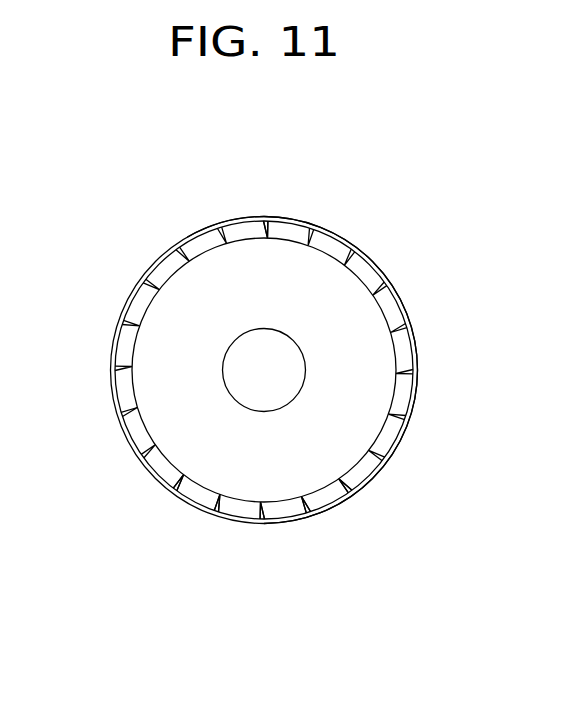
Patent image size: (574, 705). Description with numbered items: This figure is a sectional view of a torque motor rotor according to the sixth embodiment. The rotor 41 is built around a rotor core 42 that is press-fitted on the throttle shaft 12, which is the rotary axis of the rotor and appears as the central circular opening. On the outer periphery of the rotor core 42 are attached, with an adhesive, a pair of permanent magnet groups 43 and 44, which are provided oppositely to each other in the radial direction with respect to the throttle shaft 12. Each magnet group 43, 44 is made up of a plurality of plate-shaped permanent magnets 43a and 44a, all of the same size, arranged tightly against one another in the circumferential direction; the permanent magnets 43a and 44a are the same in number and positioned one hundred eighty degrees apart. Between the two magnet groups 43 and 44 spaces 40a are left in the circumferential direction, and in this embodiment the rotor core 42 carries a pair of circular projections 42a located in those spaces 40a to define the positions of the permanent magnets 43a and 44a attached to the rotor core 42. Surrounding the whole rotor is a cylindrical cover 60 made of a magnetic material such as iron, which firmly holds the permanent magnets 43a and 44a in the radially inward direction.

The throttle shaft 12 is at (267, 343).
The spaces 40a is at (253, 225).
The rotor 41 is at (240, 217).
The rotor core 42 is at (360, 328).
The circular projections 42a is at (267, 233).
The permanent magnet group 43 is at (152, 265).
The permanent magnets 43a is at (192, 500).
The permanent magnet group 44 is at (377, 262).
The permanent magnets 44a is at (340, 503).
The cylindrical cover 60 is at (310, 223).